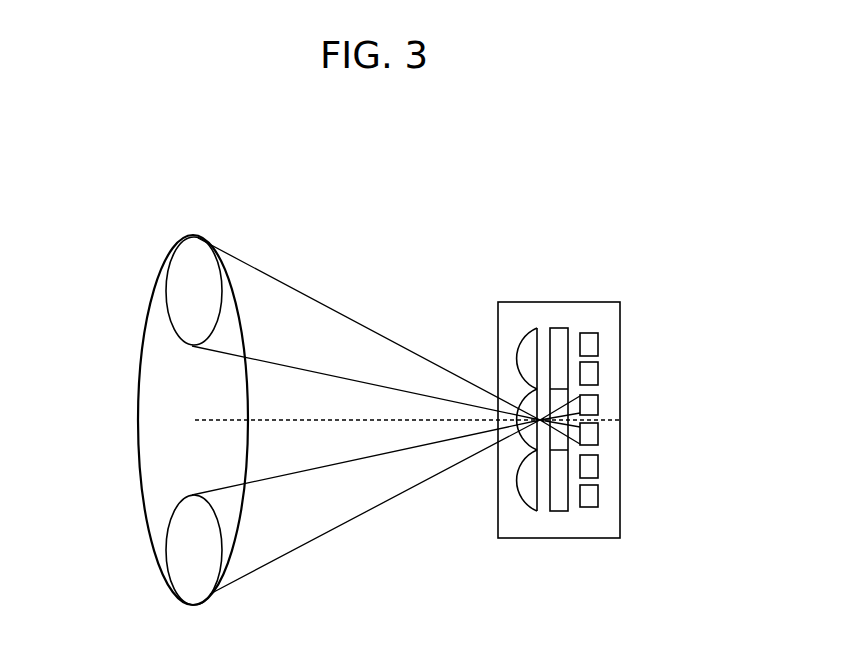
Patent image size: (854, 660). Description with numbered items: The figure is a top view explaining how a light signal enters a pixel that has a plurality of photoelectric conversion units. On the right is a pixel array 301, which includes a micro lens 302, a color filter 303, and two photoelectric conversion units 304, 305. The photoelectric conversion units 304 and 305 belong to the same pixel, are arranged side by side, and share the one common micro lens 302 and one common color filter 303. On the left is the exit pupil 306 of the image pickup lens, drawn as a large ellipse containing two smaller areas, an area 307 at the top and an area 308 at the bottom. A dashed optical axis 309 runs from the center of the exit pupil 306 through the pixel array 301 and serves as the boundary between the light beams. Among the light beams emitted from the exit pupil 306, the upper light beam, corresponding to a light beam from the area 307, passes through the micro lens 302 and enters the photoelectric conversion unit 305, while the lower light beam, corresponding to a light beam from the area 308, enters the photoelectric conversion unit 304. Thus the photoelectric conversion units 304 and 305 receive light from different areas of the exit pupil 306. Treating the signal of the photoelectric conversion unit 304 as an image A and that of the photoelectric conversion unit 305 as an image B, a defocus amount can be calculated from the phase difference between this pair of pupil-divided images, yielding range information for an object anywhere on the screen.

The pixel array 301 is at (620, 316).
The micro lens 302 is at (512, 338).
The color filter 303 is at (558, 328).
The photoelectric conversion unit 304 is at (598, 404).
The photoelectric conversion unit 305 is at (598, 432).
The exit pupil 306 is at (137, 416).
The area 307 is at (166, 297).
The area 308 is at (167, 548).
The optical axis 309 is at (360, 420).